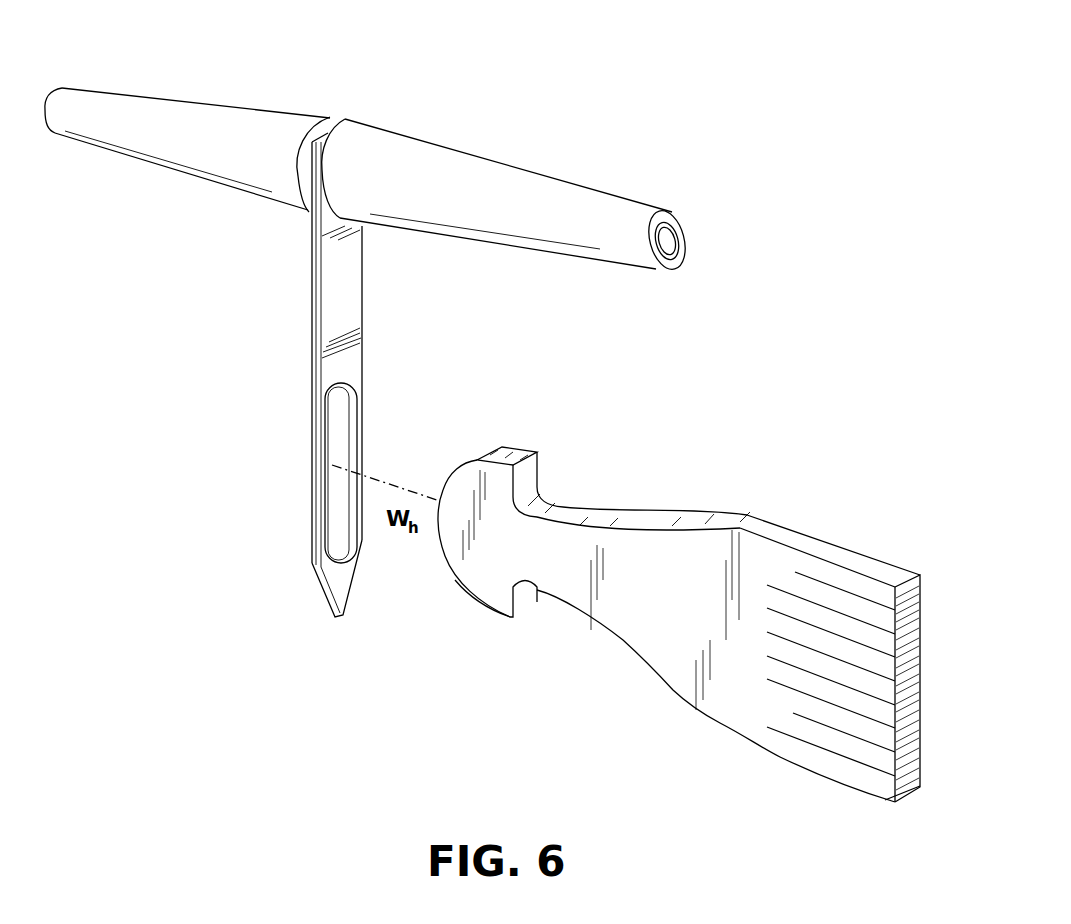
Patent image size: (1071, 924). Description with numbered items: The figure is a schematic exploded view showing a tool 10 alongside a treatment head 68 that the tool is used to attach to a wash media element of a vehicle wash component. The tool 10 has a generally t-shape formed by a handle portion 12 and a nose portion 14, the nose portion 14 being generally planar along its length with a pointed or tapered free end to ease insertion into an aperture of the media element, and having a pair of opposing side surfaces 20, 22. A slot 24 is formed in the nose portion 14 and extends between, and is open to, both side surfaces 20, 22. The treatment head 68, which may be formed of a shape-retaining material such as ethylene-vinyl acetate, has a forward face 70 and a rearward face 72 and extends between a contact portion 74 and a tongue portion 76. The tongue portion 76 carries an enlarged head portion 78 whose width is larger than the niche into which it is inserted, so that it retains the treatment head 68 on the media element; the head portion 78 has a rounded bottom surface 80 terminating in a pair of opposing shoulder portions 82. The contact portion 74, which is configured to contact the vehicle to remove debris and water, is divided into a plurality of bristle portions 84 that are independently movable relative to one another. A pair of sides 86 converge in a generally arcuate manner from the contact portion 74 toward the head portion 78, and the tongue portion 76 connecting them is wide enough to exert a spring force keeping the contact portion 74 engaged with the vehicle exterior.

The tool 10 is at (432, 117).
The handle portion 12 is at (568, 170).
The nose portion 14 is at (365, 270).
The side surface 20 is at (312, 373).
The side surface 22 is at (355, 360).
The slot 24 is at (336, 522).
The treatment head 68 is at (714, 487).
The forward face 70 is at (683, 677).
The rearward face 72 is at (815, 528).
The contact portion 74 is at (873, 588).
The tongue portion 76 is at (545, 490).
The enlarged head portion 78 is at (492, 585).
The rounded bottom surface 80 is at (442, 545).
The shoulder portion 82 is at (525, 465).
The bristle portion 84 is at (885, 785).
The side 86 is at (622, 520).